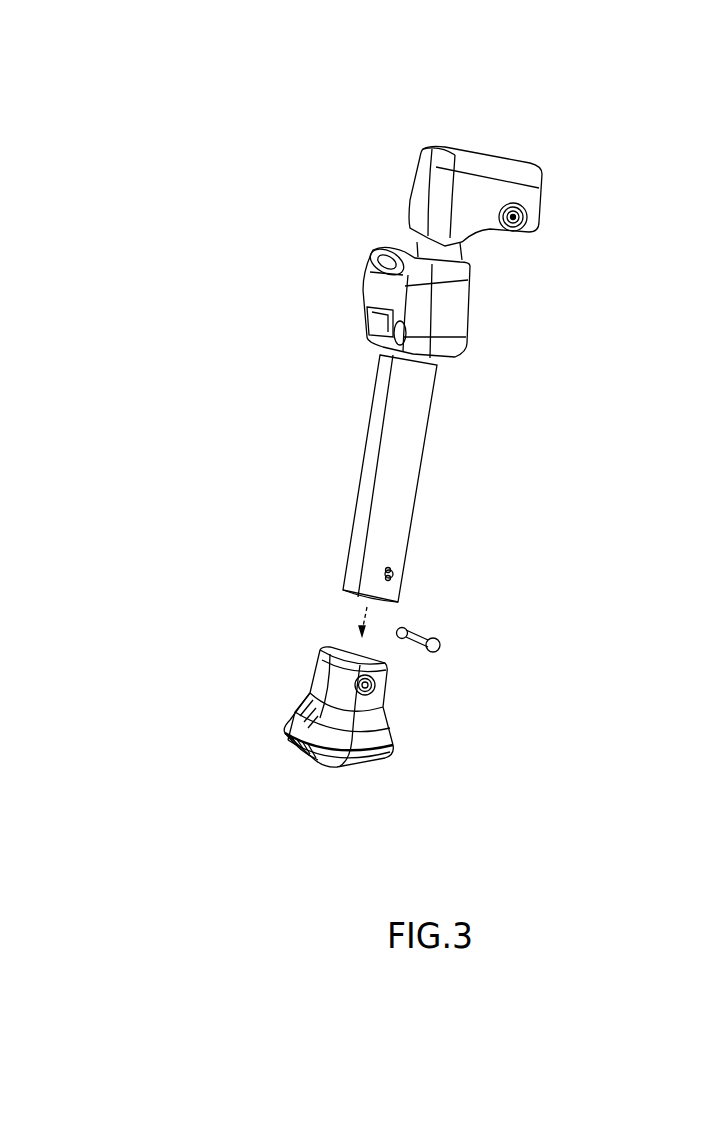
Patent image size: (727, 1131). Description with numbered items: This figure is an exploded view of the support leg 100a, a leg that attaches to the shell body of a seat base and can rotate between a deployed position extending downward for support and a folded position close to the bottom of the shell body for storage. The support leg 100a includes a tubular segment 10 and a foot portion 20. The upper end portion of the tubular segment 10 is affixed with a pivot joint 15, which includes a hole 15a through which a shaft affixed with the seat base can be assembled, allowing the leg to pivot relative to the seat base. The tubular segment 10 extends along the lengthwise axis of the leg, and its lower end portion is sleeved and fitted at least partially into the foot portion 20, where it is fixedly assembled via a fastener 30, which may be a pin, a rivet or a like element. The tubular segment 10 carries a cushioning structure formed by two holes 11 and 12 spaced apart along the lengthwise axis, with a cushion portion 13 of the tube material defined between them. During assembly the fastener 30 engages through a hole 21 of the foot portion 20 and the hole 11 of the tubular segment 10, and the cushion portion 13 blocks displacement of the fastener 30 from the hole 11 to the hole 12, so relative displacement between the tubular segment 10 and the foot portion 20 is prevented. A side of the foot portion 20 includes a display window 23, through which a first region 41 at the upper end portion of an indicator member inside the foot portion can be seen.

The support leg 100a is at (120, 51).
The pivot joint 15 is at (490, 173).
The hole 15a is at (518, 221).
The tubular segment 10 is at (443, 488).
The hole 12 is at (390, 568).
The cushion portion 13 is at (391, 575).
The hole 11 is at (392, 580).
The fastener 30 is at (440, 648).
The foot portion 20 is at (362, 715).
The hole 21 is at (378, 687).
The display window 23 is at (287, 717).
The first region 41 is at (298, 720).